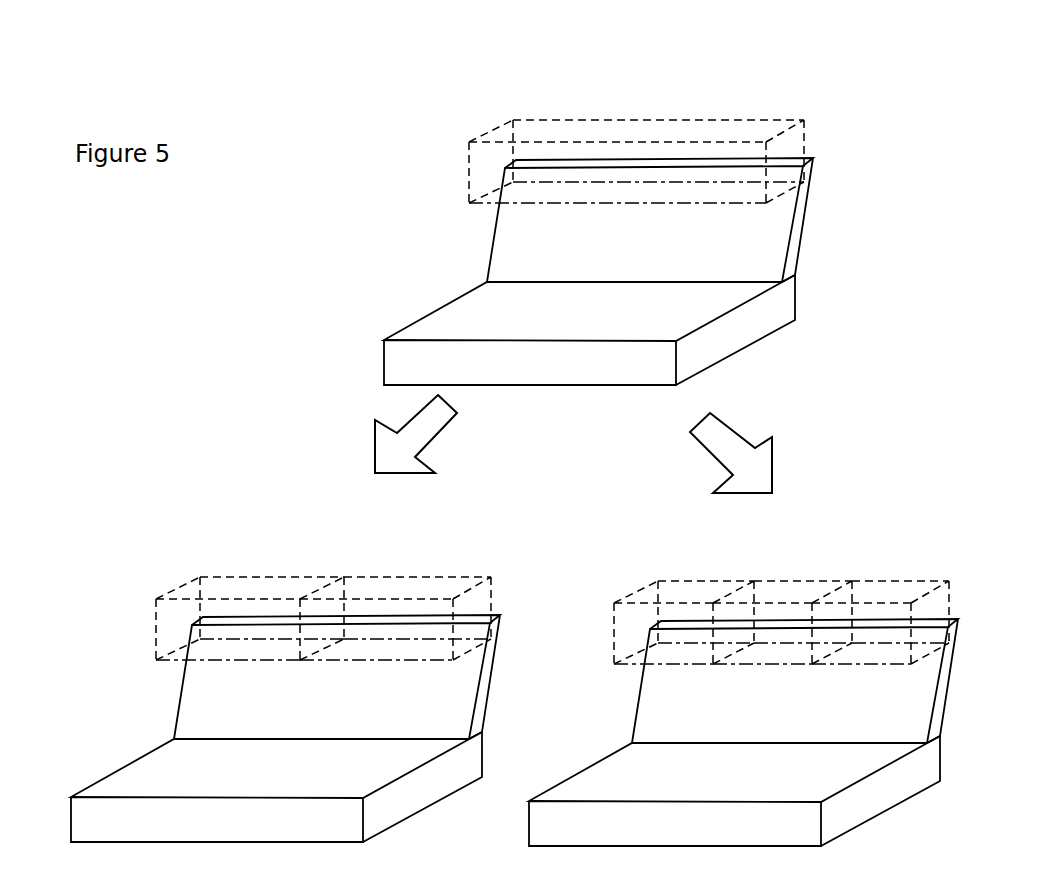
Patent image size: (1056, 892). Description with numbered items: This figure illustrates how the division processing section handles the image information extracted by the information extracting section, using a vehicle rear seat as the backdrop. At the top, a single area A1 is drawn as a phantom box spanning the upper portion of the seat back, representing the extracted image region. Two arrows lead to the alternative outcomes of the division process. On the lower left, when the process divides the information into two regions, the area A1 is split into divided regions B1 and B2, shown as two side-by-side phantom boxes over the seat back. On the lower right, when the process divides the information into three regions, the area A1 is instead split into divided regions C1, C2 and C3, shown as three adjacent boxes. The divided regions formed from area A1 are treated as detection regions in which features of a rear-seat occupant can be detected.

The area A1 is at (687, 108).
The divided region B1 is at (265, 578).
The divided region B2 is at (457, 578).
The divided region C1 is at (673, 582).
The divided region C2 is at (802, 582).
The divided region C3 is at (907, 582).